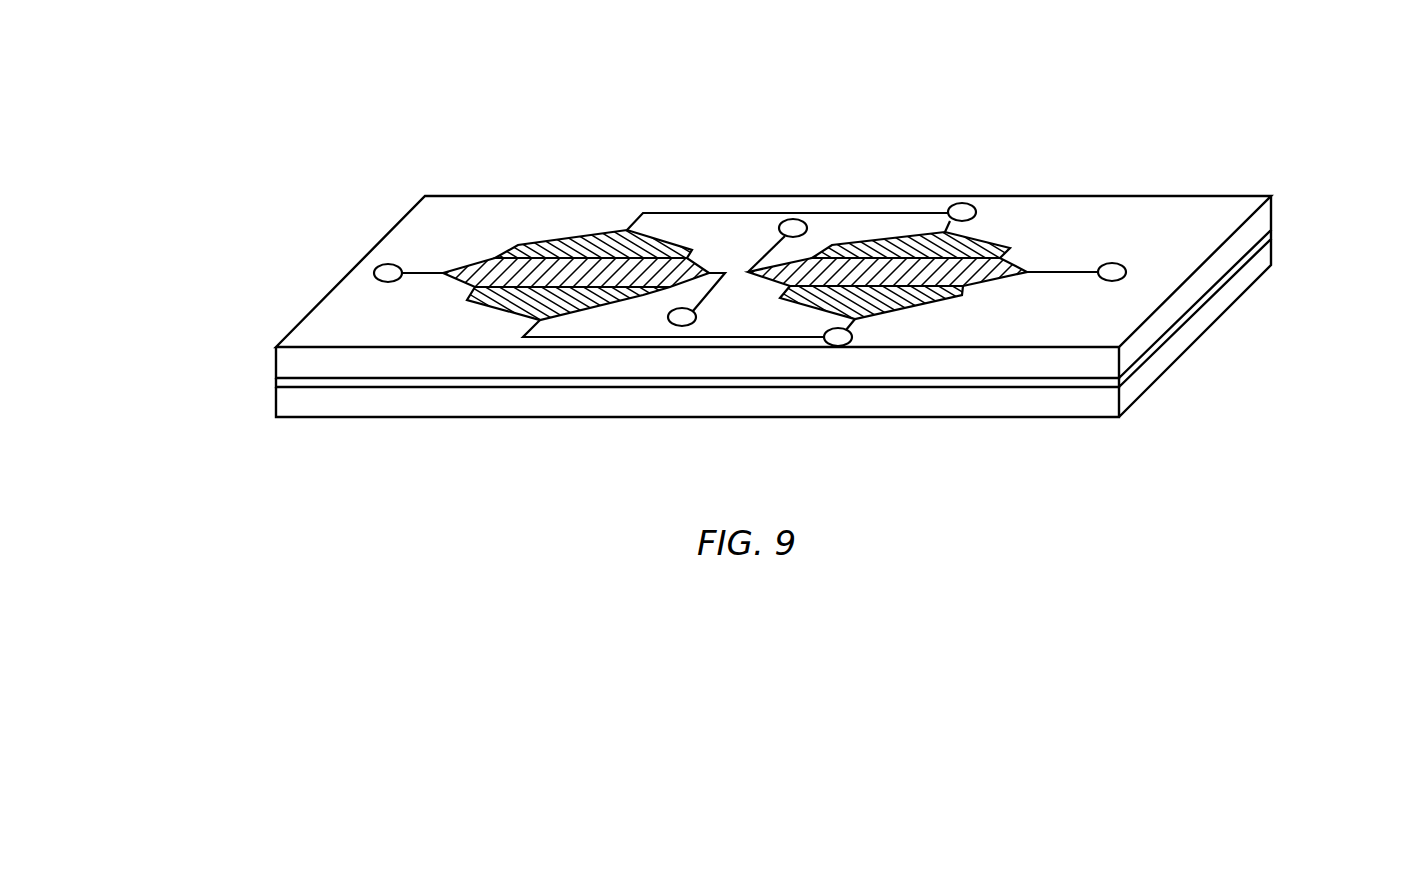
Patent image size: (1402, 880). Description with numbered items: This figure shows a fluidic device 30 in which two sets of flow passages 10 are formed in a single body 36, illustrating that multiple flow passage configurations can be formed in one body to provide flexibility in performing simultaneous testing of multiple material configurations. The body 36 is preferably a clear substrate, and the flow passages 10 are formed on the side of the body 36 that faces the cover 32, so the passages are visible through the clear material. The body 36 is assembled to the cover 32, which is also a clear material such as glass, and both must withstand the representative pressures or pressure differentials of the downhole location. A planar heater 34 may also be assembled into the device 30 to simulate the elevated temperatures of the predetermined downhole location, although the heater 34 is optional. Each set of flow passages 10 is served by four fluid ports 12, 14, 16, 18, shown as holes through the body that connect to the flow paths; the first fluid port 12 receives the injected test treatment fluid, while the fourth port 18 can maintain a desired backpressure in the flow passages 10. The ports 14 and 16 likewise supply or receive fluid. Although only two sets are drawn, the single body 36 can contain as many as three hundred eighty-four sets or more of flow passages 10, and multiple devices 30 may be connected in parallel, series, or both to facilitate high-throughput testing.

The fluidic device 30 is at (1322, 134).
The flow passages 10 is at (579, 213).
The first fluid port 12 is at (377, 267).
The fluid port 14 is at (967, 204).
The fluid port 16 is at (848, 345).
The fourth port 18 is at (681, 326).
The body 36 is at (276, 362).
The cover 32 is at (276, 383).
The planar heater 34 is at (276, 399).